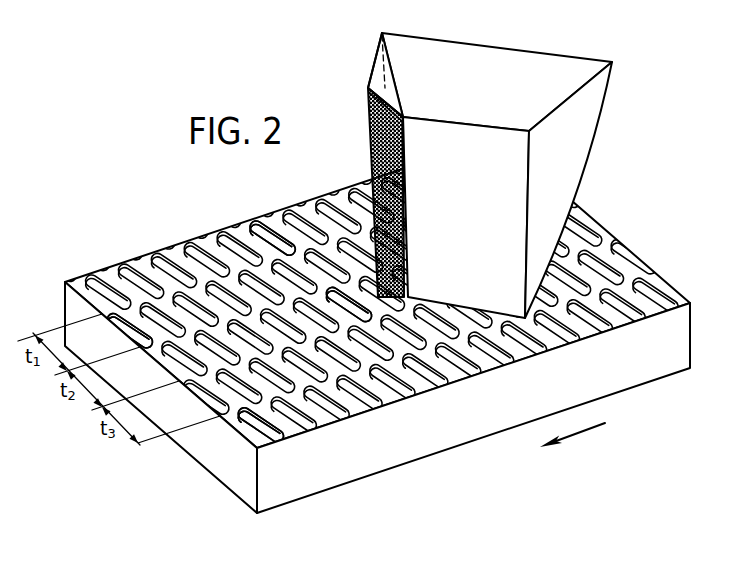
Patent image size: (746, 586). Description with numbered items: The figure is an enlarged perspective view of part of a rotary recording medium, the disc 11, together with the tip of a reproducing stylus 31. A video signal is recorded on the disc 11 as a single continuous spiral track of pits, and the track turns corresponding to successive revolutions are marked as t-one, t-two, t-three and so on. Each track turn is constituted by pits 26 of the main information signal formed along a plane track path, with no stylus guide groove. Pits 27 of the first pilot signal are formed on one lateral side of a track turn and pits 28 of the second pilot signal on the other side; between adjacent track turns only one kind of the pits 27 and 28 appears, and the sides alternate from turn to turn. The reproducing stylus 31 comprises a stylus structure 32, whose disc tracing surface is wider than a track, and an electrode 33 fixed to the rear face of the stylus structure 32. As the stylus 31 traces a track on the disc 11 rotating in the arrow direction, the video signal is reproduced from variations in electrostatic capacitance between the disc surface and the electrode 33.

The disc 11 is at (143, 250).
The pits of the main information signal 26 is at (226, 242).
The pits of the first pilot signal 27 is at (287, 238).
The pits of the second pilot signal 28 is at (138, 349).
The reproducing stylus 31 is at (361, 91).
The stylus structure 32 is at (481, 175).
The electrode 33 is at (370, 123).